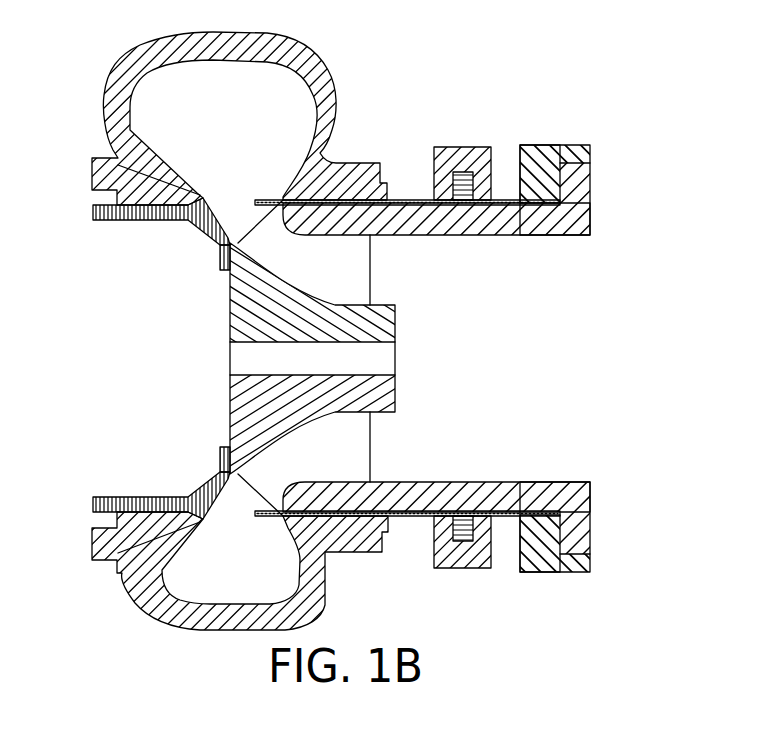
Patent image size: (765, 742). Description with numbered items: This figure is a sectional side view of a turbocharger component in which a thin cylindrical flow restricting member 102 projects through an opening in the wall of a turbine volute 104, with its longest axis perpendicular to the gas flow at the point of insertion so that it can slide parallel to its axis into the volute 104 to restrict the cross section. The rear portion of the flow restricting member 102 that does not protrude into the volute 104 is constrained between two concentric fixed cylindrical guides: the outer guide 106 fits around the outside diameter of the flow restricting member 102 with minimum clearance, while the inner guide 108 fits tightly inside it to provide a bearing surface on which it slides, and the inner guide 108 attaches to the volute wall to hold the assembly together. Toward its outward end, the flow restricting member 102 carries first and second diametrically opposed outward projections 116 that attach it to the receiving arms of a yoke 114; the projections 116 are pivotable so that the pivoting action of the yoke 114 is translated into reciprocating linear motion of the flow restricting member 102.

The flow restricting member 102 is at (258, 516).
The turbine volute 104 is at (157, 611).
The outer guide 106 is at (542, 567).
The inner guide 108 is at (587, 528).
The yoke 114 is at (466, 567).
The outward projections 116 is at (437, 545).